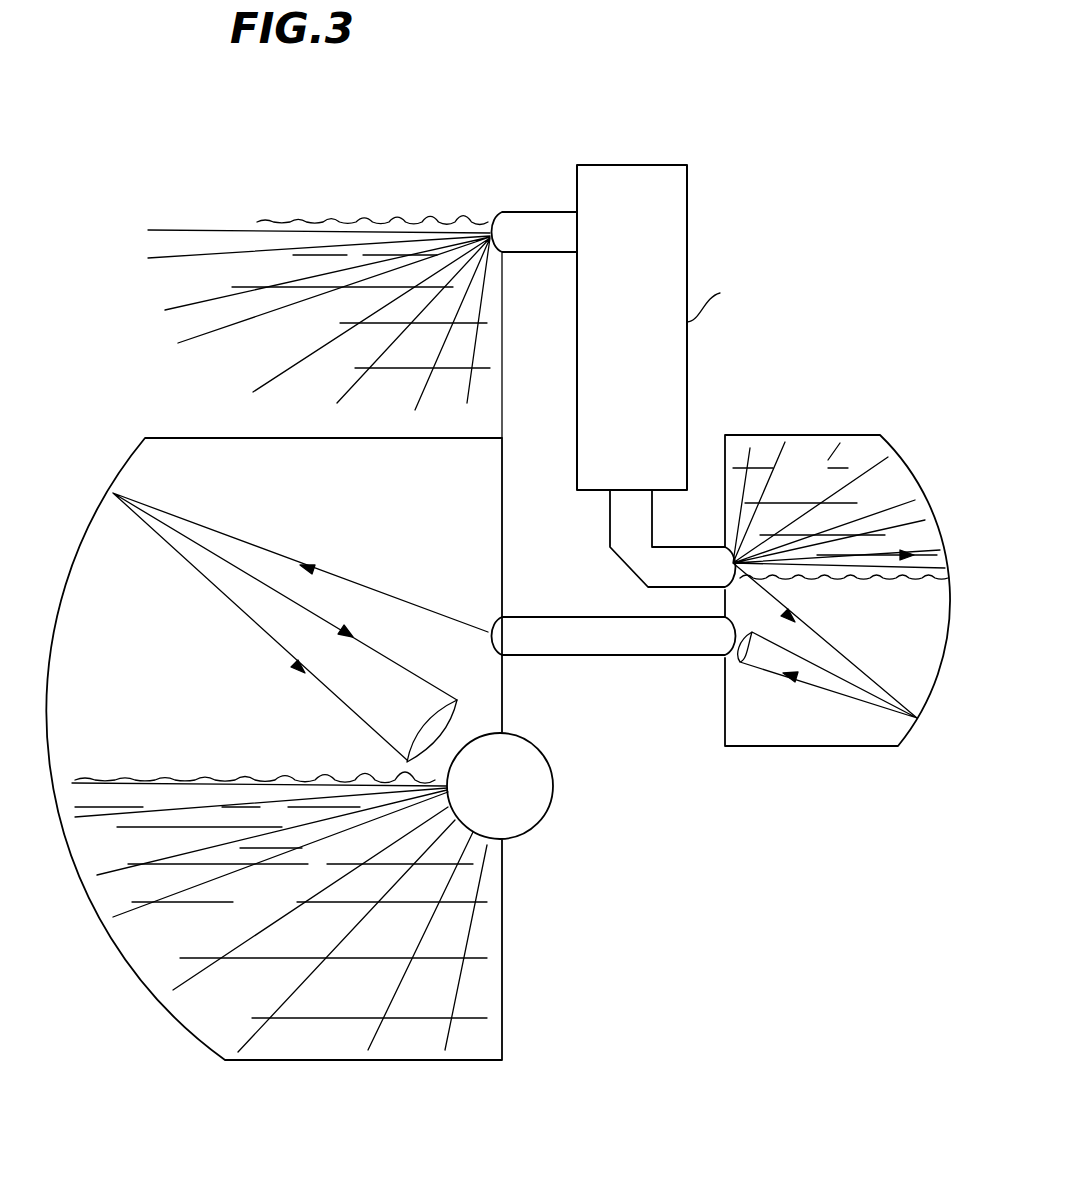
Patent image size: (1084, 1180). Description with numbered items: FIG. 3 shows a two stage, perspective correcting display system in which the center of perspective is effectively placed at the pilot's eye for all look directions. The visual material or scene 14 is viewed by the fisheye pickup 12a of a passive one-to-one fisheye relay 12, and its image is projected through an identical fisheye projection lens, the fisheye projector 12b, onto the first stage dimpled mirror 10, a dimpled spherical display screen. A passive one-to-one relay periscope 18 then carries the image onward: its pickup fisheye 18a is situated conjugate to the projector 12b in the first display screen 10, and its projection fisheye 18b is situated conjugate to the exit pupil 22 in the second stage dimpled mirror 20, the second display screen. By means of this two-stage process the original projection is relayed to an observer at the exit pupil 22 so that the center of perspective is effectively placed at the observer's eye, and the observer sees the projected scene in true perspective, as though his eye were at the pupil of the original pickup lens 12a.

The first stage dimpled mirror 10 is at (942, 690).
The passive 1:1 fisheye relay 12 is at (689, 185).
The fisheye pickup 12a is at (490, 212).
The fisheye projector 12b is at (779, 580).
The scene 14 is at (333, 214).
The passive 1:1 relay periscope 18 is at (572, 617).
The fisheye pickup 18a is at (730, 667).
The fisheye projector 18b is at (492, 620).
The second stage dimpled mirror 20 is at (110, 917).
The exit pupil 22 is at (552, 766).